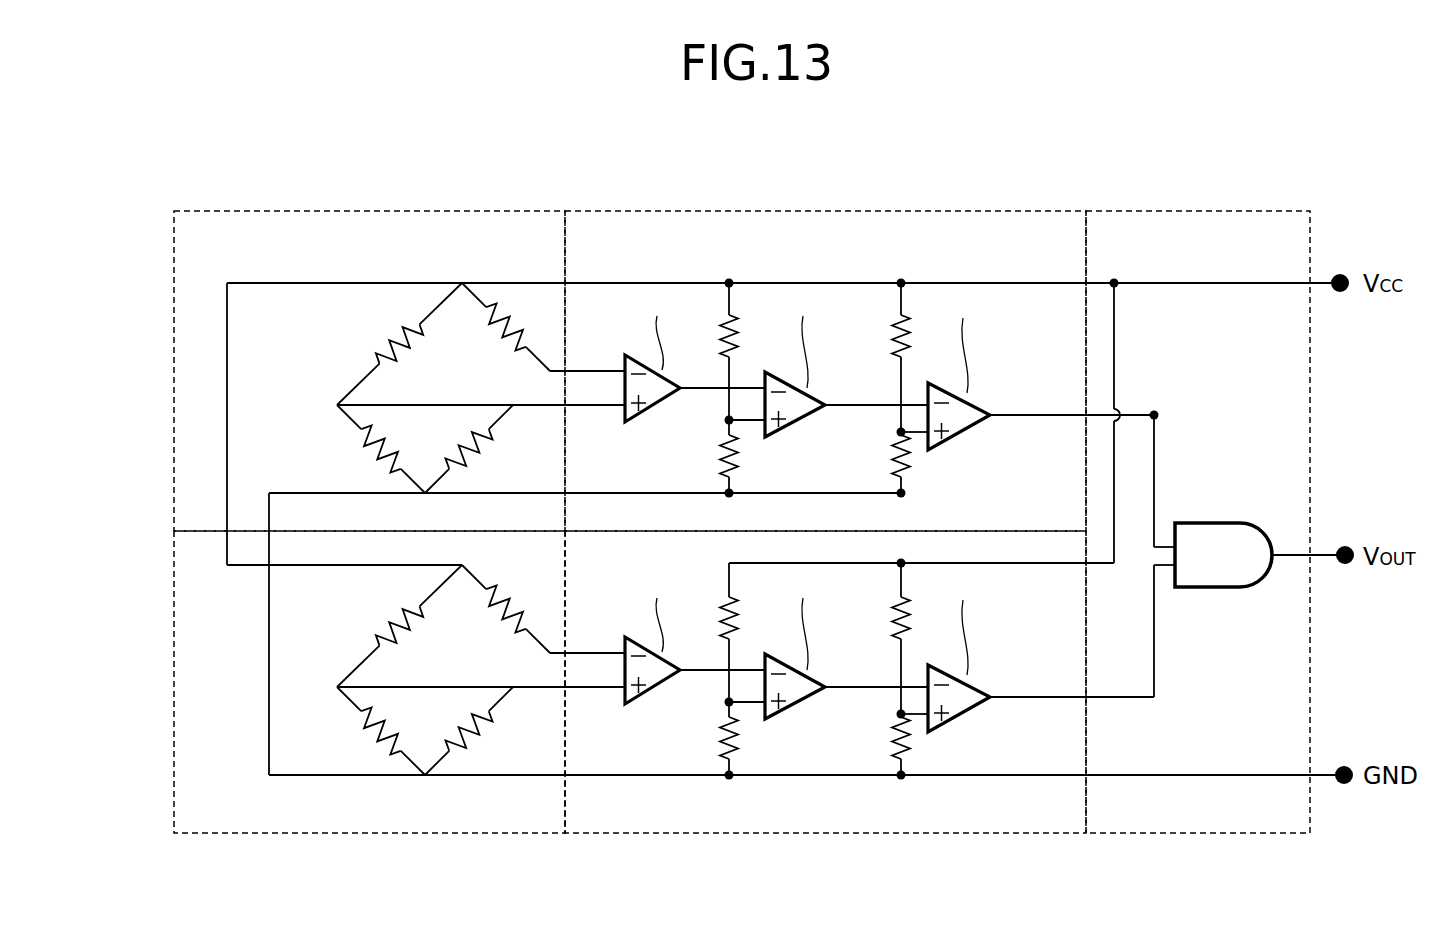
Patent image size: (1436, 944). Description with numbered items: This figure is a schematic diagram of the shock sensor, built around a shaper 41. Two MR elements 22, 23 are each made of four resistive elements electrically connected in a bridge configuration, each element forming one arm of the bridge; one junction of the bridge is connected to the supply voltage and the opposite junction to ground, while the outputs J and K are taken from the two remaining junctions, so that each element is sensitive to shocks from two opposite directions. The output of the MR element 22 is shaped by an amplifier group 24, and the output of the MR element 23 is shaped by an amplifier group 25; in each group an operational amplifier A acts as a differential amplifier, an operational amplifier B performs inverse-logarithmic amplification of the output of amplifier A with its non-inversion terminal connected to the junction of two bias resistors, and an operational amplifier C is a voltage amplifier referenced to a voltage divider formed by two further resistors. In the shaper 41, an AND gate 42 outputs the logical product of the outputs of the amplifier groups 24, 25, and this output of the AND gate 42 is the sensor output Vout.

The MR element 22 is at (489, 211).
The MR element 23 is at (488, 835).
The amplifier group 24 is at (967, 211).
The amplifier group 25 is at (886, 835).
The shaper 41 is at (1215, 482).
The AND gate 42 is at (1212, 525).